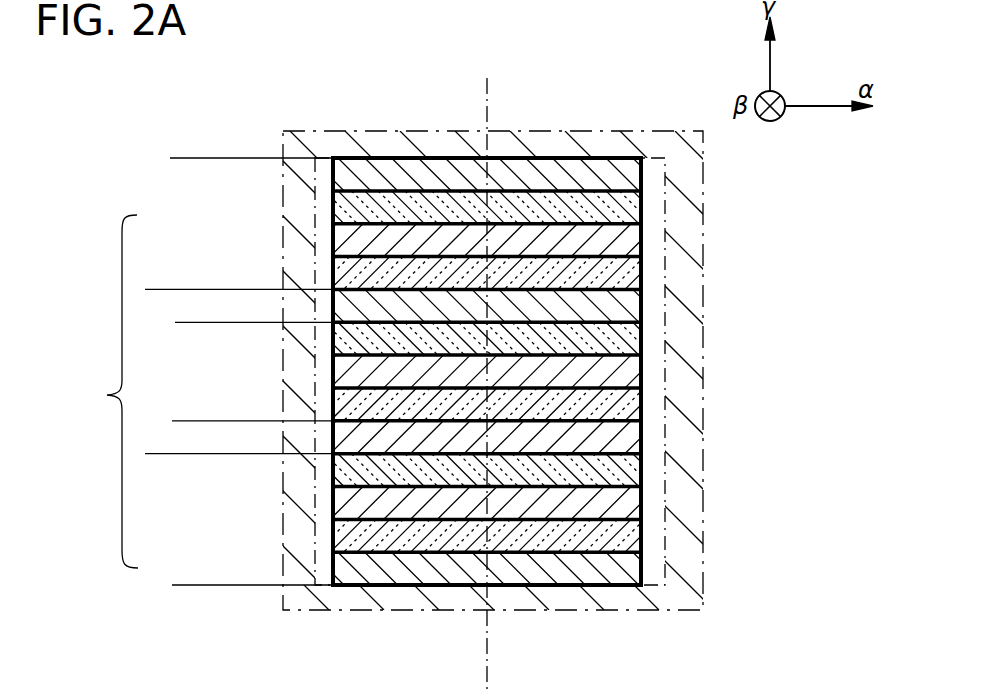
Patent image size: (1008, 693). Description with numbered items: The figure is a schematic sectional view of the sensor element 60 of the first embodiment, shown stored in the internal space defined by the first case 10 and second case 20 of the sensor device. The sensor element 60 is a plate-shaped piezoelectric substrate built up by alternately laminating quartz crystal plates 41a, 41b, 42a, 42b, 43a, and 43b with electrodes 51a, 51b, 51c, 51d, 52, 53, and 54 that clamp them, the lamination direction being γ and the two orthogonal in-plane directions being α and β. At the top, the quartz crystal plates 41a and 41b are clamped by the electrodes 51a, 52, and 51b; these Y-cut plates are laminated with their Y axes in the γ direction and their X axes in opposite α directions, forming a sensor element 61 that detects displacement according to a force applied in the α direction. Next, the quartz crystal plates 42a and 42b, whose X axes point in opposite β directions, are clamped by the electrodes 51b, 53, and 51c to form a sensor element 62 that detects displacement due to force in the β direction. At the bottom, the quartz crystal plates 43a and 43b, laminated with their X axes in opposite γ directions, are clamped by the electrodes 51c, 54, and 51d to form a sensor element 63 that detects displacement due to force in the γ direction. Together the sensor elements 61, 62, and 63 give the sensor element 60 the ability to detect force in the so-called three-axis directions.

The first case 10 is at (504, 370).
The second case 20 is at (686, 378).
The electrode 51a is at (367, 183).
The electrode 51b is at (367, 305).
The electrode 51c is at (367, 436).
The electrode 51d is at (367, 562).
The quartz crystal plate 41a is at (367, 212).
The quartz crystal plate 41b is at (367, 268).
The quartz crystal plate 42a is at (367, 344).
The quartz crystal plate 42b is at (367, 403).
The quartz crystal plate 43a is at (367, 469).
The quartz crystal plate 43b is at (367, 528).
The electrode 52 is at (367, 240).
The electrode 53 is at (367, 372).
The electrode 54 is at (367, 500).
The sensor element 61 is at (180, 176).
The sensor element 62 is at (156, 308).
The sensor element 63 is at (185, 440).
The sensor element 60 is at (107, 391).